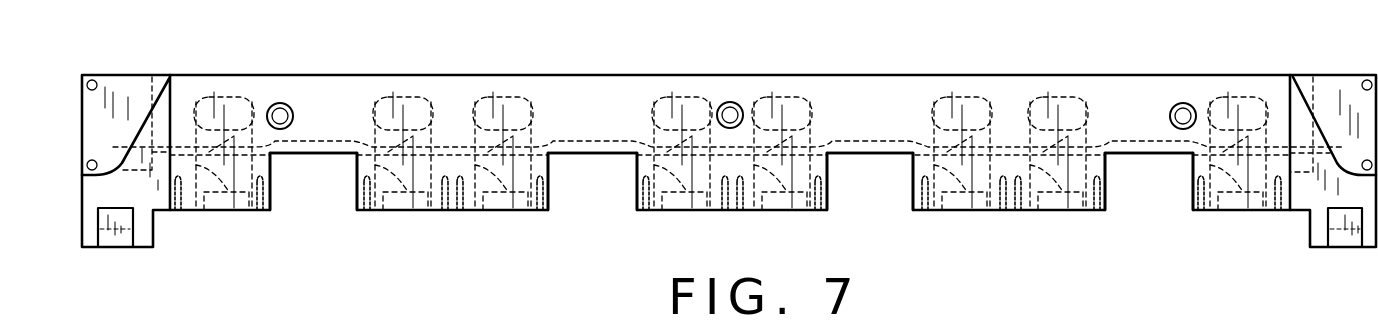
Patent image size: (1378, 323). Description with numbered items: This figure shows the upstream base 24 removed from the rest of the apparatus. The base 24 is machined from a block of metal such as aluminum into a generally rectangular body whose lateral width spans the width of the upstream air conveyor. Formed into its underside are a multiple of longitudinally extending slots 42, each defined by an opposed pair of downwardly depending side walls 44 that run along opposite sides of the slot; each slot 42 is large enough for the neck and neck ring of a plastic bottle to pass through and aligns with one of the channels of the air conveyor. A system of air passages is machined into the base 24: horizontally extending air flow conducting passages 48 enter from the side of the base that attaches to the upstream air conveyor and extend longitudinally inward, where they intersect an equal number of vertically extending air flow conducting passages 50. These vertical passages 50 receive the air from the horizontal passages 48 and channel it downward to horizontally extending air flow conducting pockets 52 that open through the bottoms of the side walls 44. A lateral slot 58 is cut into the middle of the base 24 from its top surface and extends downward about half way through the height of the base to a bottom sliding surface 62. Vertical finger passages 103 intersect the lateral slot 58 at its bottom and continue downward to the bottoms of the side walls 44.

The upstream base 24 is at (864, 100).
The longitudinally extending slot 42 is at (308, 192).
The side wall 44 is at (272, 193).
The horizontal air flow conducting passage 48 is at (218, 130).
The vertical air flow conducting passage 50 is at (250, 175).
The horizontally extending air flow conducting pocket 52 is at (220, 195).
The lateral slot 58 is at (562, 118).
The bottom sliding surface 62 is at (313, 143).
The vertical finger passage 103 is at (197, 148).